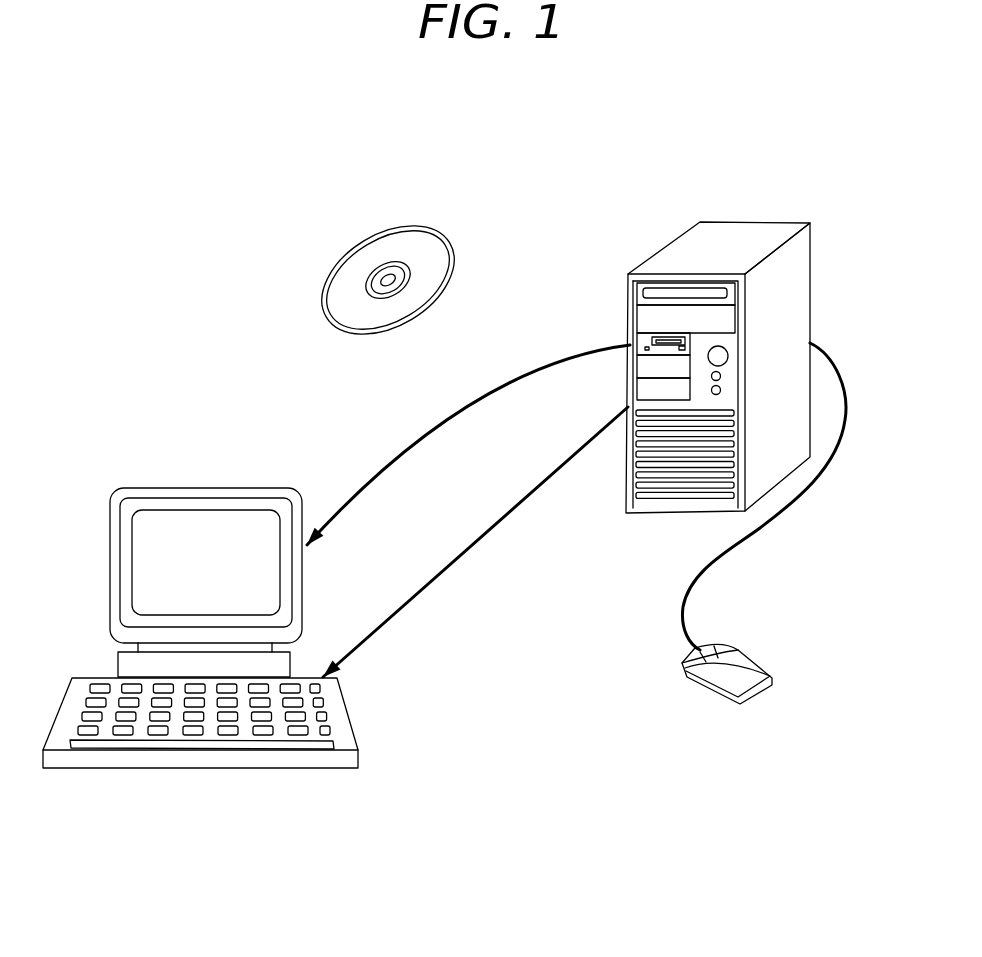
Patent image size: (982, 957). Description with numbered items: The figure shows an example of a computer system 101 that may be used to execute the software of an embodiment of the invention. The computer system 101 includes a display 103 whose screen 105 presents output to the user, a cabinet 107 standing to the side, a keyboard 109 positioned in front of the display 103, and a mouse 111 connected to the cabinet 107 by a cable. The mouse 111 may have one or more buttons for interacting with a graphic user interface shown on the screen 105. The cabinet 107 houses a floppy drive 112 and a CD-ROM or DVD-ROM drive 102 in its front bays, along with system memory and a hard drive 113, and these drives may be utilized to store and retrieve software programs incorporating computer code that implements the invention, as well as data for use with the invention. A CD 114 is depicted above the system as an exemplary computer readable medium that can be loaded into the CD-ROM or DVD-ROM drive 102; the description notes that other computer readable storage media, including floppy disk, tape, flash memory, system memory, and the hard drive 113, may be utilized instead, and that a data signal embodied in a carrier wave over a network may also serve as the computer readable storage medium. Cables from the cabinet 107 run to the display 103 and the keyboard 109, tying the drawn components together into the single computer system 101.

The computer system 101 is at (735, 108).
The CD-ROM or DVD-ROM drive 102 is at (692, 287).
The display 103 is at (298, 505).
The screen 105 is at (150, 542).
The cabinet 107 is at (810, 272).
The keyboard 109 is at (88, 768).
The mouse 111 is at (750, 657).
The floppy drive 112 is at (640, 343).
The hard drive 113 is at (707, 315).
The CD 114 is at (452, 242).